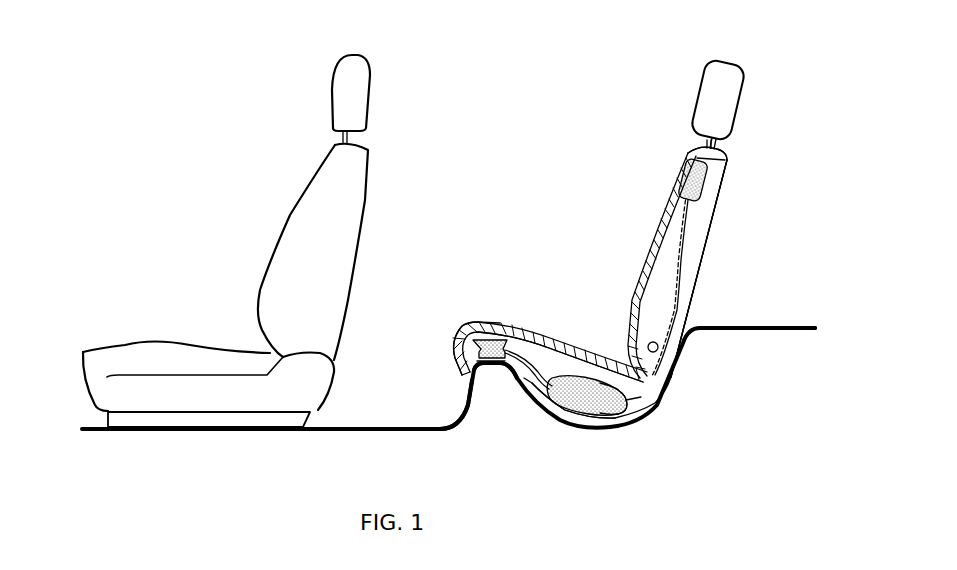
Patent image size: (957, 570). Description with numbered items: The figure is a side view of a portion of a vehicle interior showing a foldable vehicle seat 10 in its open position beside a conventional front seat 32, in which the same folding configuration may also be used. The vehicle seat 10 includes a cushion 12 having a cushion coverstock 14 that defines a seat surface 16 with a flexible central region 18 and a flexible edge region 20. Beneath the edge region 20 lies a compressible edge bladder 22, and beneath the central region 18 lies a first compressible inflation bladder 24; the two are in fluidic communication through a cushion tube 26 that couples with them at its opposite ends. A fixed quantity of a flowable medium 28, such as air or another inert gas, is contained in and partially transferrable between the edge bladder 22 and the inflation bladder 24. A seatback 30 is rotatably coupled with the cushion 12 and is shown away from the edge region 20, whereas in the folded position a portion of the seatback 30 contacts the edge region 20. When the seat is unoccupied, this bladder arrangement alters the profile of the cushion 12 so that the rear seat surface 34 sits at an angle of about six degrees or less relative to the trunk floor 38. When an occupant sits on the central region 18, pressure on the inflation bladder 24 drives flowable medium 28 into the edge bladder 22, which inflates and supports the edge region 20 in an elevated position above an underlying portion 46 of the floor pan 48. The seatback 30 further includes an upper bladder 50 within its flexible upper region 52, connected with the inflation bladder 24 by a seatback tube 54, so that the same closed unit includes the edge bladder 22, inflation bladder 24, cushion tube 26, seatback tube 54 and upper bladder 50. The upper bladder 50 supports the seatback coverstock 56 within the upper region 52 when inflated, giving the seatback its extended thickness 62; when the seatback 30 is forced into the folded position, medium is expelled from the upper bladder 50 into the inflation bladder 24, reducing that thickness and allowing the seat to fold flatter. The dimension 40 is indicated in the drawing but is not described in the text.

The vehicle seat 10 is at (782, 167).
The cushion 12 is at (637, 431).
The cushion coverstock 14 is at (543, 340).
The seat surface 16 is at (590, 364).
The central region 18 is at (627, 360).
The edge region 20 is at (520, 321).
The edge bladder 22 is at (492, 367).
The inflation bladder 24 is at (577, 413).
The cushion tube 26 is at (530, 407).
The flowable medium 28 is at (603, 413).
The seatback 30 is at (707, 258).
The front seat 32 is at (228, 175).
The rear seat surface 34 is at (697, 293).
The trunk floor 38 is at (762, 325).
The seat height 40 is at (442, 360).
The underlying portion 46 is at (460, 402).
The floor pan 48 is at (651, 412).
The upper bladder 50 is at (695, 185).
The upper region 52 is at (660, 199).
The seatback tube 54 is at (680, 313).
The seatback coverstock 56 is at (634, 287).
The thickness 62 is at (730, 150).